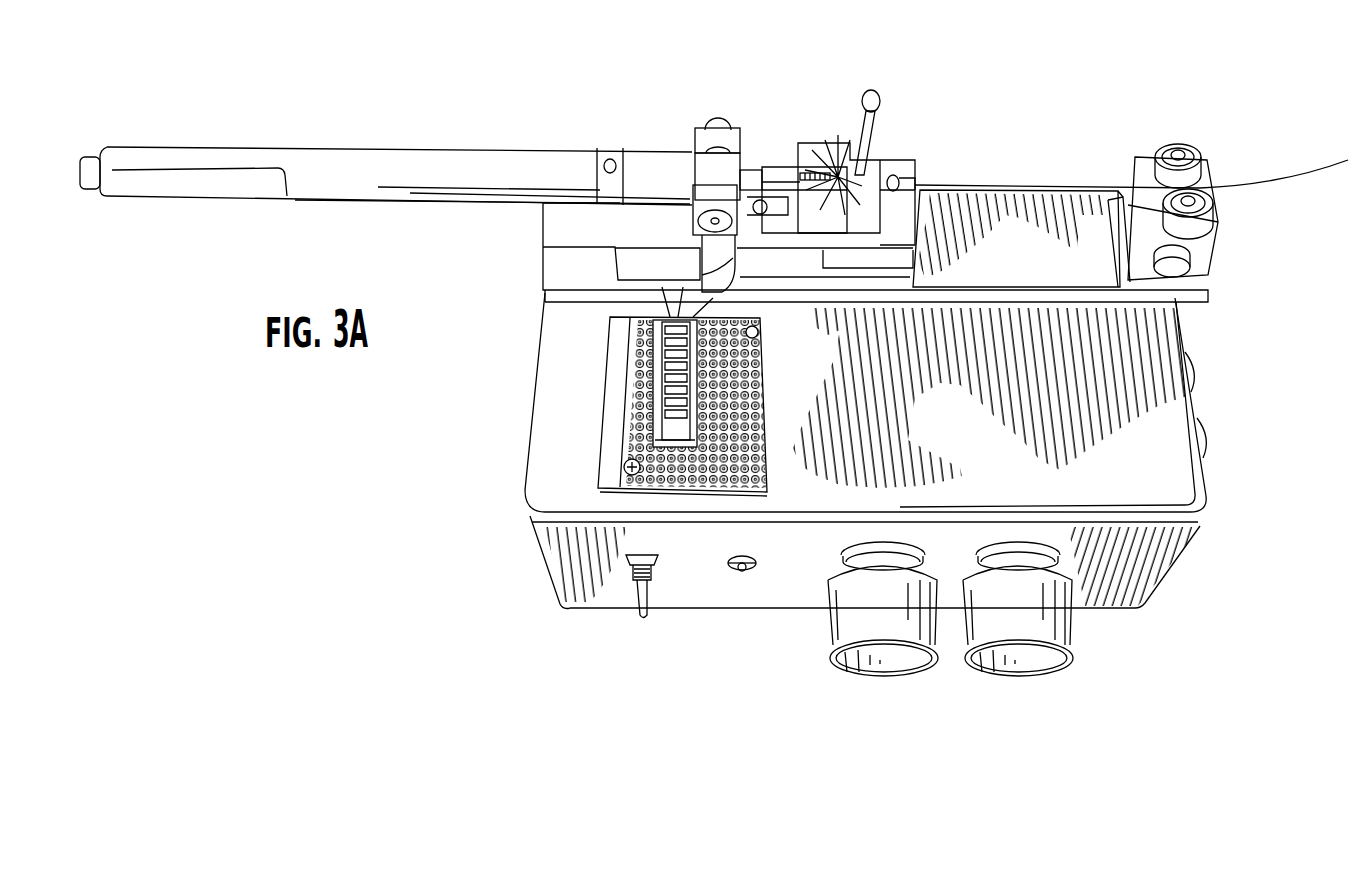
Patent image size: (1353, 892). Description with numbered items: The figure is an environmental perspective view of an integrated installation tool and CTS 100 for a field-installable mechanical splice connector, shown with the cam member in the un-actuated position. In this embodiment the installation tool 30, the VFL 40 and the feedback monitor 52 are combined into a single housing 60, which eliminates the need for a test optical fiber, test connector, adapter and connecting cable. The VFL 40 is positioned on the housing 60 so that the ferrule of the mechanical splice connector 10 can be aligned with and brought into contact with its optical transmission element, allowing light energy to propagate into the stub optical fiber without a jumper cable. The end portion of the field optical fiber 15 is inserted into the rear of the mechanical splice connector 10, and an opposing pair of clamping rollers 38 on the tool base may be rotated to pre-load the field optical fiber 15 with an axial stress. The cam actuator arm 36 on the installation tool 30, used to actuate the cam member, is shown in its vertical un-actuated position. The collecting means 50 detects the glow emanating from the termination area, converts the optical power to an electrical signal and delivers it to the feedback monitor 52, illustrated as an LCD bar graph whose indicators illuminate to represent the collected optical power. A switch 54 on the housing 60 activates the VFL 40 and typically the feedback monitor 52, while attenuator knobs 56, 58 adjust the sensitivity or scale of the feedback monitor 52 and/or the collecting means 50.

The integrated installation tool and CTS 100 is at (597, 123).
The mechanical splice connector 10 is at (777, 165).
The field optical fiber 15 is at (1288, 182).
The installation tool 30 is at (1014, 270).
The cam actuator arm 36 is at (883, 103).
The clamping rollers 38 is at (1170, 142).
The VFL 40 is at (333, 151).
The collecting means 50 is at (805, 143).
The feedback monitor 52 is at (615, 412).
The switch 54 is at (637, 613).
The attenuator knob 56 is at (882, 680).
The attenuator knob 58 is at (1037, 680).
The housing 60 is at (1182, 557).